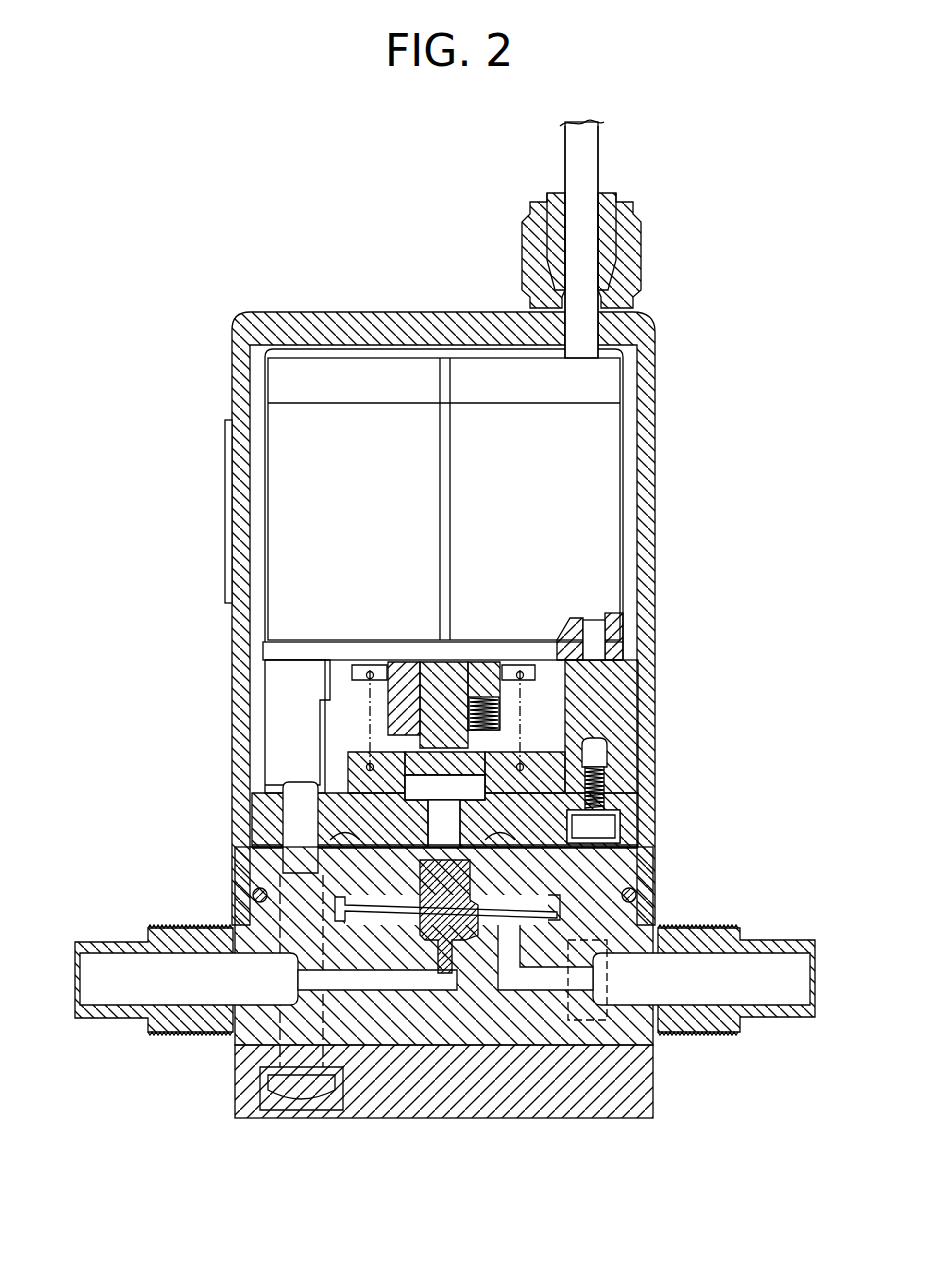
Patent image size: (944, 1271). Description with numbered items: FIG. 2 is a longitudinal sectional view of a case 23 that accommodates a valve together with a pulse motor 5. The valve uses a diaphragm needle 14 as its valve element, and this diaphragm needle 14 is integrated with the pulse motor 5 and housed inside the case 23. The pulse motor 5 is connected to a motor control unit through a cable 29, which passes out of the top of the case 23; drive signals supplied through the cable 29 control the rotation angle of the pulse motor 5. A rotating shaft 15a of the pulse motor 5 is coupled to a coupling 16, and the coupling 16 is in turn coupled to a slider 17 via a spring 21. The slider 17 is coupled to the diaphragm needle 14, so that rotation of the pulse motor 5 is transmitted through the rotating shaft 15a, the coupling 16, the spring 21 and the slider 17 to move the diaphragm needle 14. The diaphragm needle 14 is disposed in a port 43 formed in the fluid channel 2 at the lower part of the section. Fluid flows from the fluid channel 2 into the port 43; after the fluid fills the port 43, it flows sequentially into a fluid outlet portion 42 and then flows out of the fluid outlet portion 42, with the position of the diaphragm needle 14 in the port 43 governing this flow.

The fluid channel 2 is at (115, 993).
The pulse motor 5 is at (592, 488).
The diaphragm needle 14 is at (460, 928).
The rotating shaft 15a is at (432, 680).
The coupling 16 is at (490, 692).
The slider 17 is at (293, 770).
The spring 21 is at (357, 700).
The case 23 is at (331, 335).
The cable 29 is at (575, 162).
The fluid outlet portion 42 is at (788, 993).
The port 43 is at (450, 924).